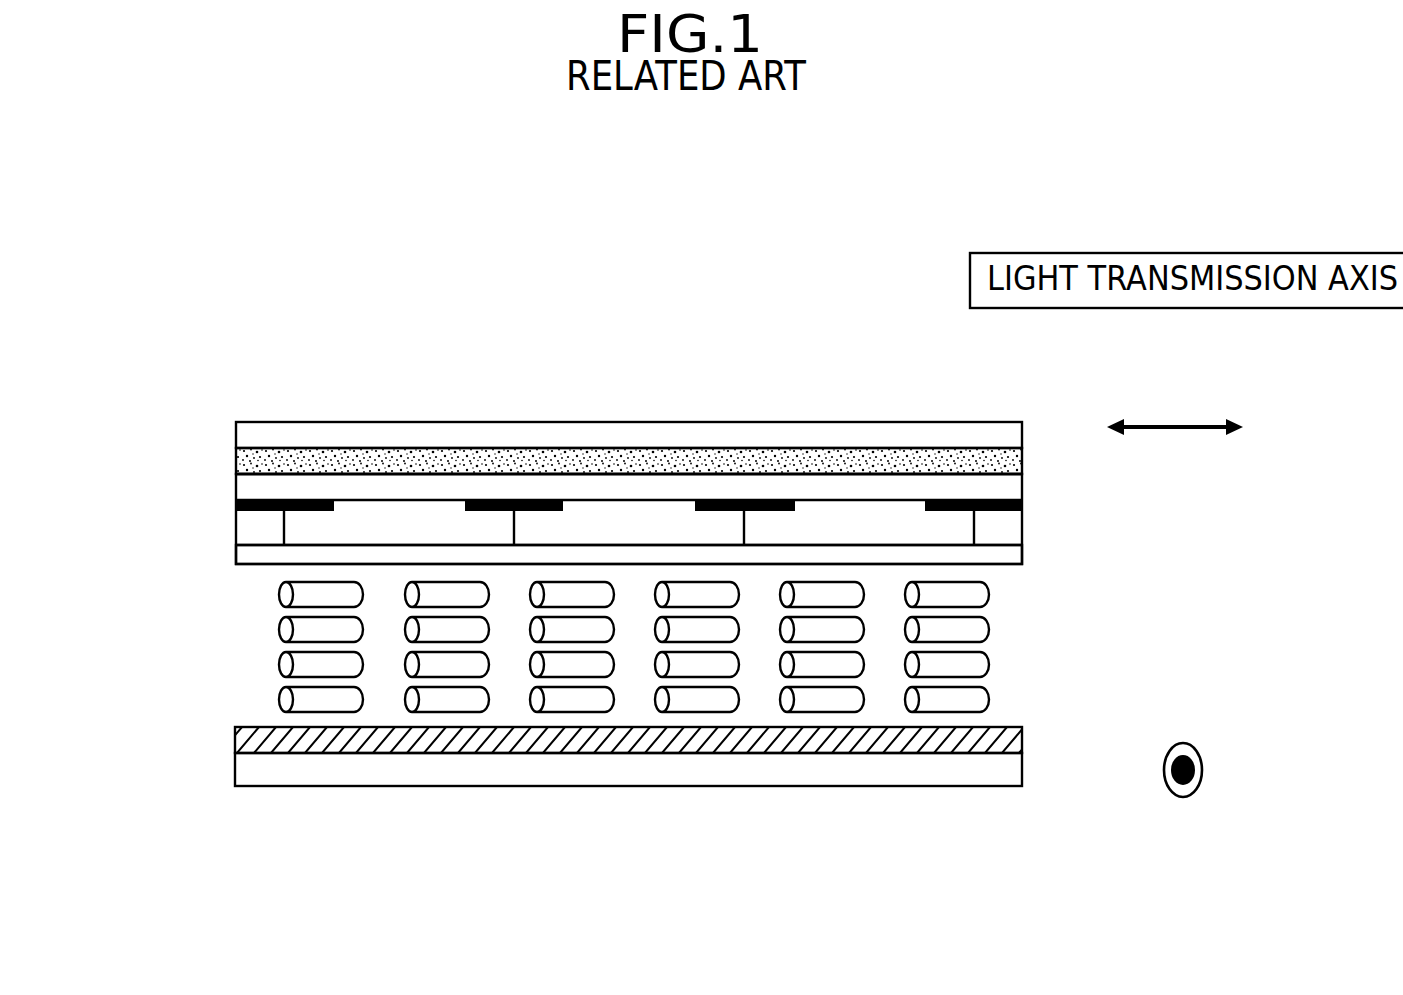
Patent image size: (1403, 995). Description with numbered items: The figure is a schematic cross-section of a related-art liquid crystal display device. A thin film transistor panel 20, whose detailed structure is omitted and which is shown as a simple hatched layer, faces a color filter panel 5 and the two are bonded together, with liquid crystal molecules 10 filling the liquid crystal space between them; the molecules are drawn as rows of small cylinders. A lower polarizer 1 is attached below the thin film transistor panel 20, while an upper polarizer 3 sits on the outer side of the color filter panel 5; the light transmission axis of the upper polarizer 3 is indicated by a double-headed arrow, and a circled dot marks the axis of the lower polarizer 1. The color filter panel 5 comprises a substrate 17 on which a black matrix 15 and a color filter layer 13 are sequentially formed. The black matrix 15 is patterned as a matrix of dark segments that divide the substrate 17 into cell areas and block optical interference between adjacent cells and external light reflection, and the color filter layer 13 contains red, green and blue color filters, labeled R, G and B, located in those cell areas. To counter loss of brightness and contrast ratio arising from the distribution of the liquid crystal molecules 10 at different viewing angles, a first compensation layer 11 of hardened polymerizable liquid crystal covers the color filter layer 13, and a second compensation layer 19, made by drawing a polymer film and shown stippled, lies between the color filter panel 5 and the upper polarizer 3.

The lower polarizer 1 is at (235, 768).
The upper polarizer 3 is at (236, 432).
The color filter panel 5 is at (138, 480).
The liquid crystal molecules 10 is at (979, 592).
The first compensation layer 11 is at (236, 558).
The color filter layer 13 is at (236, 535).
The black matrix 15 is at (236, 509).
The substrate 17 is at (236, 486).
The second compensation layer 19 is at (236, 459).
The thin film transistor panel 20 is at (235, 736).